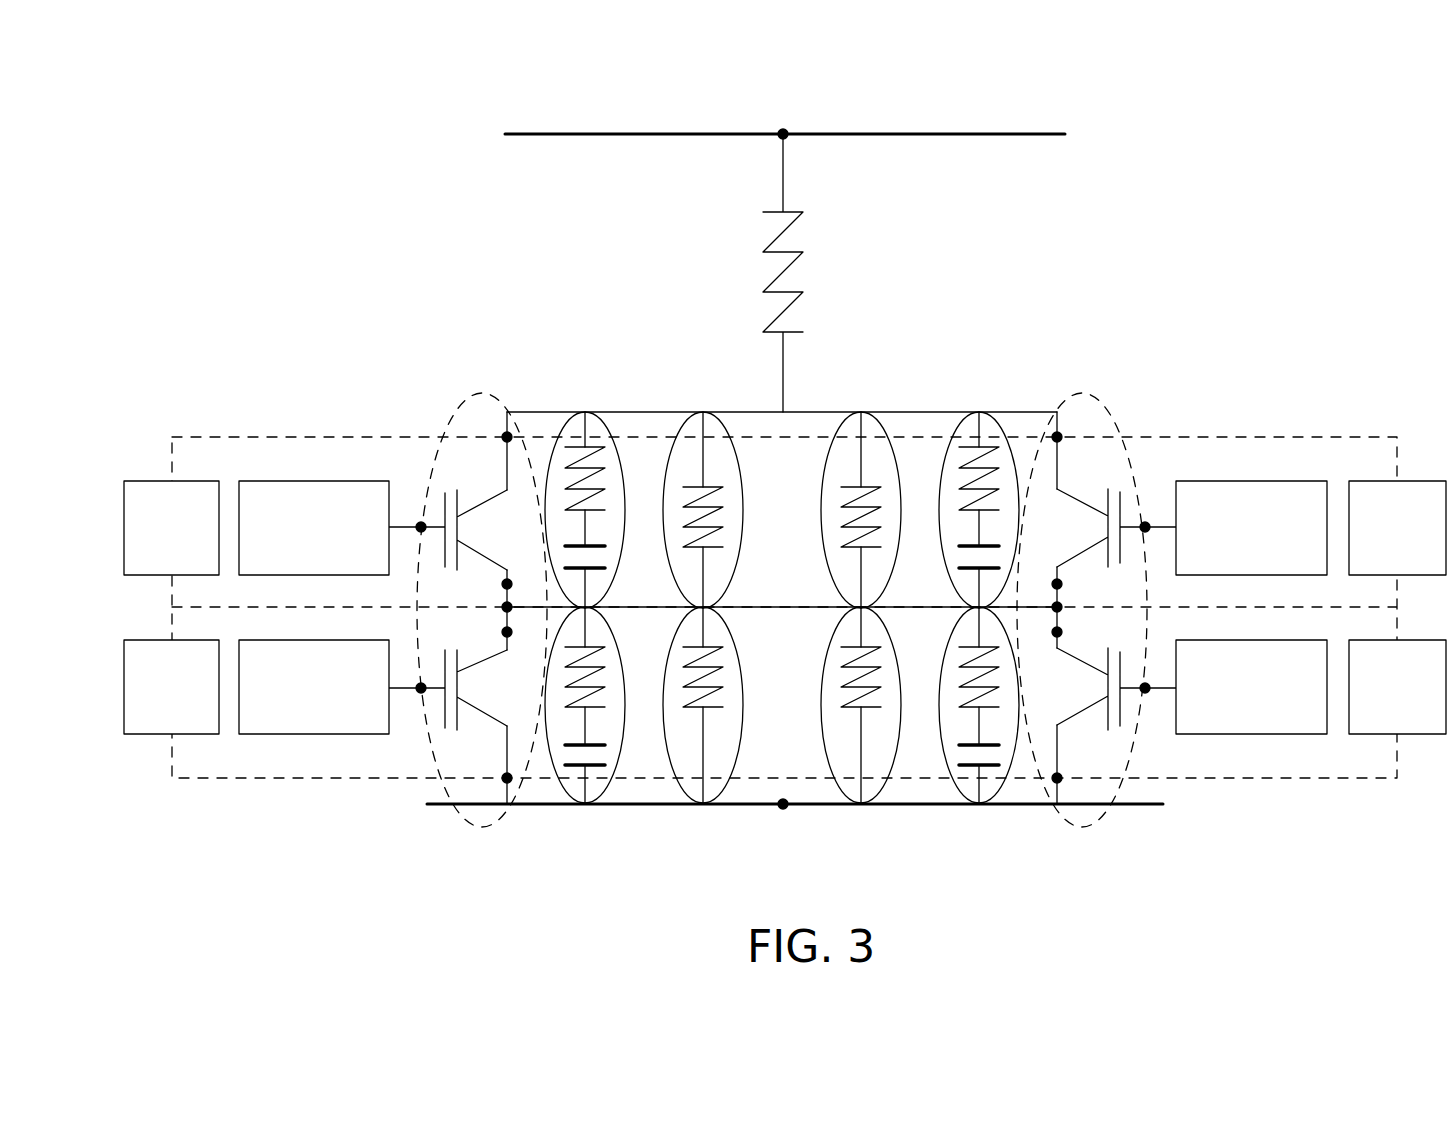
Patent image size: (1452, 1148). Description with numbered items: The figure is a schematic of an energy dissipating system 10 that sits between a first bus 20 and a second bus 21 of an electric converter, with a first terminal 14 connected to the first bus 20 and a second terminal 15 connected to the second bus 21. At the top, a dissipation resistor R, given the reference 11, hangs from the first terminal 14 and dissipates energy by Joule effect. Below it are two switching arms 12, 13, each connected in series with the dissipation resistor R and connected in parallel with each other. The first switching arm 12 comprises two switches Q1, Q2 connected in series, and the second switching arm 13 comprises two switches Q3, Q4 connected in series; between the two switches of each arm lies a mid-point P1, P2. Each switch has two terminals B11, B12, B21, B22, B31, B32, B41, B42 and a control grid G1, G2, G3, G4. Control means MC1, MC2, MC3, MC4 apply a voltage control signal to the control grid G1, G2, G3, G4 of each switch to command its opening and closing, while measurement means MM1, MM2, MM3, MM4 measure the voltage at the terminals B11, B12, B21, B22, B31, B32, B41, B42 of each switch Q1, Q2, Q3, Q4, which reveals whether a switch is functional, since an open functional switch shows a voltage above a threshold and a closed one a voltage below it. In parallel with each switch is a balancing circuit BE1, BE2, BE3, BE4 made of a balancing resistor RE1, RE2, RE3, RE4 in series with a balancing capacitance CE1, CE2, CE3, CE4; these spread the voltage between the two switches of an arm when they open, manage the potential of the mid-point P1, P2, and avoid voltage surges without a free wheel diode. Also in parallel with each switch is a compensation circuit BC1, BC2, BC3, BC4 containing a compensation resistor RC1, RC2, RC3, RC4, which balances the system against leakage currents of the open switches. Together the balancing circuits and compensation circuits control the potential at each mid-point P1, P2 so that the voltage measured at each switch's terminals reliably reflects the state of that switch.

The energy dissipating system 10 is at (1202, 280).
The resistor R 11 is at (839, 273).
The switching arm 12 is at (468, 561).
The switching arm 13 is at (1096, 561).
The first terminal 14 is at (783, 134).
The second terminal 15 is at (783, 806).
The first bus 20 is at (571, 134).
The second bus 21 is at (558, 806).
The dissipation resistor R is at (810, 272).
The switch Q1 is at (448, 702).
The switch Q2 is at (448, 516).
The switch Q3 is at (1116, 702).
The switch Q4 is at (1116, 514).
The measurement means MM1 is at (171, 687).
The measurement means MM2 is at (171, 528).
The measurement means MM3 is at (1397, 687).
The measurement means MM4 is at (1397, 528).
The control means MC1 is at (314, 687).
The control means MC2 is at (314, 528).
The control means MC3 is at (1251, 687).
The control means MC4 is at (1251, 528).
The balancing circuit BE1 is at (618, 752).
The balancing circuit BE2 is at (610, 466).
The balancing circuit BE3 is at (948, 752).
The balancing circuit BE4 is at (955, 466).
The compensation circuit BC1 is at (733, 744).
The compensation circuit BC2 is at (735, 466).
The compensation circuit BC3 is at (828, 752).
The compensation circuit BC4 is at (826, 466).
The balancing resistor RE1 is at (597, 665).
The balancing resistor RE2 is at (603, 460).
The balancing resistor RE3 is at (965, 668).
The balancing resistor RE4 is at (965, 460).
The compensation resistor RC1 is at (715, 660).
The compensation resistor RC2 is at (712, 493).
The compensation resistor RC3 is at (857, 692).
The compensation resistor RC4 is at (858, 515).
The balancing capacitance CE1 is at (605, 765).
The balancing capacitance CE2 is at (603, 568).
The balancing capacitance CE3 is at (955, 765).
The balancing capacitance CE4 is at (963, 570).
The terminal B11 is at (505, 632).
The terminal B12 is at (507, 780).
The terminal B21 is at (507, 437).
The terminal B22 is at (505, 584).
The terminal B31 is at (1067, 632).
The terminal B32 is at (1057, 780).
The terminal B41 is at (1057, 437).
The terminal B42 is at (1067, 584).
The control grid G1 is at (421, 690).
The control grid G2 is at (421, 527).
The control grid G3 is at (1145, 690).
The control grid G4 is at (1145, 527).
The mid-point P1 is at (508, 604).
The mid-point P2 is at (1055, 604).